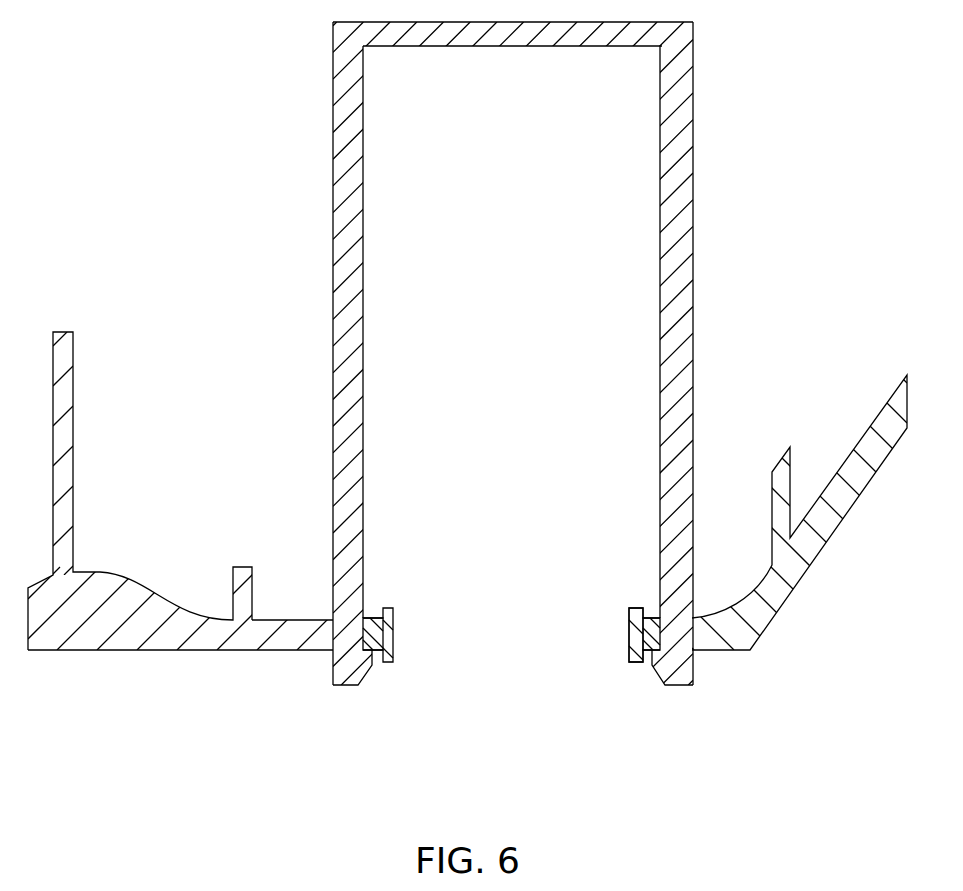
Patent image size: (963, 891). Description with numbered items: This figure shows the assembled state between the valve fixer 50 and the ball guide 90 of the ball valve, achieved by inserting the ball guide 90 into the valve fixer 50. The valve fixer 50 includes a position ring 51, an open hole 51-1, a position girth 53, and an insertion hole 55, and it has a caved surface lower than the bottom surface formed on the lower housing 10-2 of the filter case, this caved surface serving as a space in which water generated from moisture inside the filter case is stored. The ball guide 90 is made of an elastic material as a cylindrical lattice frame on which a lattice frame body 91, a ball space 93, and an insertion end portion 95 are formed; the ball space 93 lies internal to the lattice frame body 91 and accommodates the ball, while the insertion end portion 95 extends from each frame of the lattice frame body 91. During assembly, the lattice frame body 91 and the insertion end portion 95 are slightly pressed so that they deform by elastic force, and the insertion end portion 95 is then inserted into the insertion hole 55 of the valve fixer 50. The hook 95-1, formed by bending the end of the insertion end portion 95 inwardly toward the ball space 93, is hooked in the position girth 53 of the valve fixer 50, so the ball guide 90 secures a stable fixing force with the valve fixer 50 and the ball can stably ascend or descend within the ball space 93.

The lower housing 10-2 is at (97, 590).
The valve fixer 50 is at (335, 551).
The position ring 51 is at (640, 607).
The open hole 51-1 is at (483, 631).
The position girth 53 is at (290, 630).
The insertion hole 55 is at (330, 638).
The ball guide 90 is at (606, 404).
The lattice frame body 91 is at (672, 207).
The ball space 93 is at (620, 150).
The insertion end portion 95 is at (587, 697).
The hook 95-1 is at (368, 677).